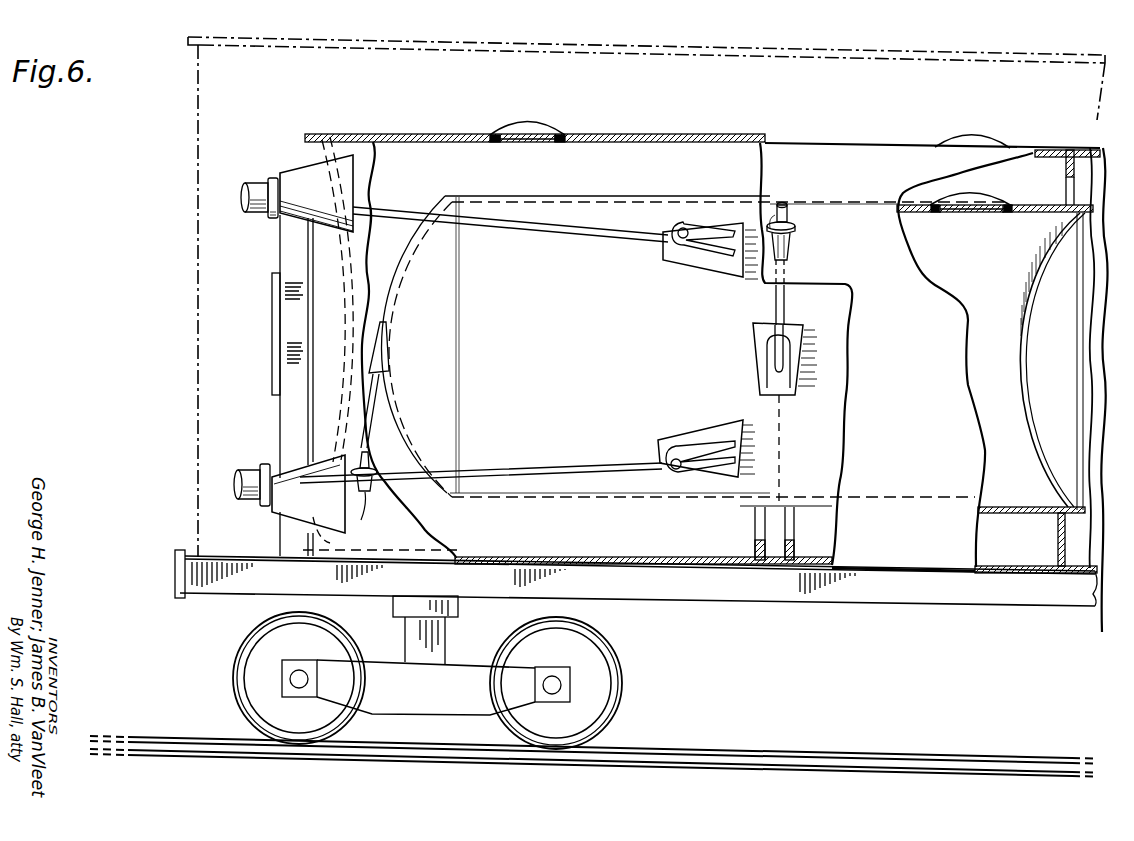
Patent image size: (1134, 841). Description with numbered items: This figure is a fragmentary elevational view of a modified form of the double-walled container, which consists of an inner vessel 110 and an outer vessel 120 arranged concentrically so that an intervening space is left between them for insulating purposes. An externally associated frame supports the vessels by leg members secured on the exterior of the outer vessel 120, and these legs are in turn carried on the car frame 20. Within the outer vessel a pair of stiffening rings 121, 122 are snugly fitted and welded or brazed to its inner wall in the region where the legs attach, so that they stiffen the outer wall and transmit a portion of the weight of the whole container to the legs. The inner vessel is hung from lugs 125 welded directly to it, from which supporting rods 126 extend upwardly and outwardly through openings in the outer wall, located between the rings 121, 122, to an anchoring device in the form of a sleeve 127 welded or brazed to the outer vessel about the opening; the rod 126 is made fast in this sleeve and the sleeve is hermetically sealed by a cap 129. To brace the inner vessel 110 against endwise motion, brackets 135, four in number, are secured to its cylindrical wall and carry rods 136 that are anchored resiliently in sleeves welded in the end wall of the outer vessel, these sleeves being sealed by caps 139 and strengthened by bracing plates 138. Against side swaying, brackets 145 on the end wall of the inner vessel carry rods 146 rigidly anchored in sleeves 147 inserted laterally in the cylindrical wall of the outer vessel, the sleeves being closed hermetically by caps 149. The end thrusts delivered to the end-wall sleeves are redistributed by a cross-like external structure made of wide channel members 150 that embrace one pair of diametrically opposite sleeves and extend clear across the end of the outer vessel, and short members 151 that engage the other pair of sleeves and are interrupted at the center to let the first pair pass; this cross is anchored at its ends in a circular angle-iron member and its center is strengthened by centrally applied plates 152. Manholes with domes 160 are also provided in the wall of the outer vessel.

The car frame 20 is at (660, 598).
The inner vessel 110 is at (582, 193).
The outer vessel 120 is at (653, 128).
The stiffening ring 121 is at (756, 540).
The stiffening ring 122 is at (796, 548).
The lug 125 is at (800, 360).
The supporting rod 126 is at (786, 312).
The sleeve 127 is at (797, 250).
The cap 129 is at (790, 208).
The bracket 135 is at (708, 276).
The rod 136 is at (556, 232).
The bracing plate 138 is at (296, 168).
The cap 139 is at (245, 192).
The bracket 145 is at (386, 354).
The rod 146 is at (380, 415).
The sleeve 147 is at (372, 458).
The cap 149 is at (377, 513).
The channel member 150 is at (282, 251).
The short member 151 is at (284, 412).
The plate 152 is at (278, 334).
The dome 160 is at (528, 122).